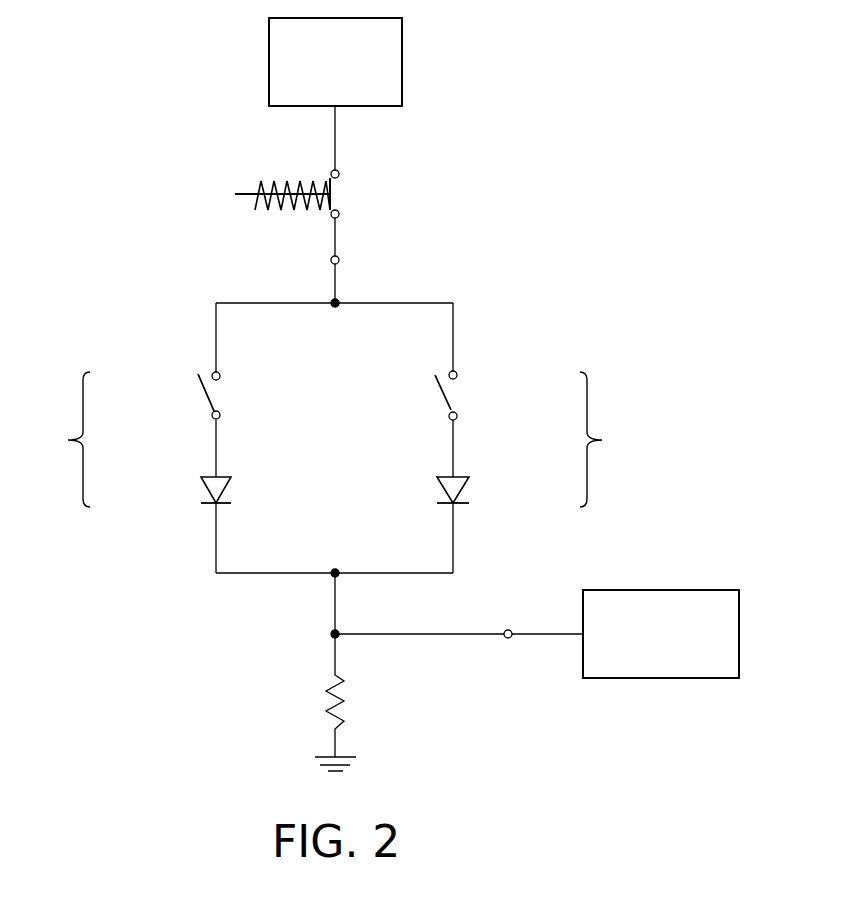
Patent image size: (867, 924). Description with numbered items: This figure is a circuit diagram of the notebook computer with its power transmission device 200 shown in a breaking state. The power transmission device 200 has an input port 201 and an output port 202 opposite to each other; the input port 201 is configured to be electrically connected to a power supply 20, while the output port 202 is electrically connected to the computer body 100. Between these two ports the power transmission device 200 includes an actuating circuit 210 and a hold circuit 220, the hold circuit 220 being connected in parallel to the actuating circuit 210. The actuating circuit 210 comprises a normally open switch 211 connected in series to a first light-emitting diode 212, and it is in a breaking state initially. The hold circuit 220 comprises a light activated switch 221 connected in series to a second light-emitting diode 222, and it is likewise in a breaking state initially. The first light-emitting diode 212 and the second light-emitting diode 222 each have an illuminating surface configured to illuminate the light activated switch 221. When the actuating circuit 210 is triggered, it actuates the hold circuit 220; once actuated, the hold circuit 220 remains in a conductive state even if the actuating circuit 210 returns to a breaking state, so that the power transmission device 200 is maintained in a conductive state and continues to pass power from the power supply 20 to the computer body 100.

The power supply 20 is at (402, 62).
The power transmission device 200 is at (487, 282).
The input port 201 is at (340, 259).
The output port 202 is at (509, 639).
The actuating circuit 210 is at (127, 438).
The normally open switch 211 is at (198, 396).
The first light-emitting diode 212 is at (196, 491).
The hold circuit 220 is at (544, 438).
The light activated switch 221 is at (468, 394).
The second light-emitting diode 222 is at (475, 492).
The computer body 100 is at (660, 590).